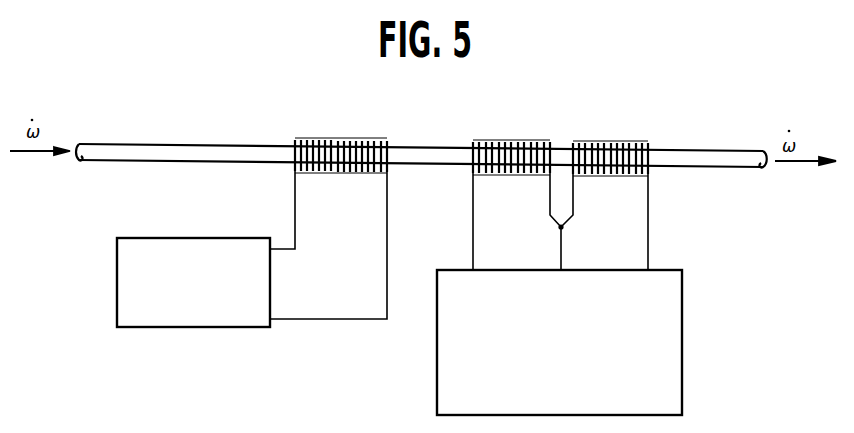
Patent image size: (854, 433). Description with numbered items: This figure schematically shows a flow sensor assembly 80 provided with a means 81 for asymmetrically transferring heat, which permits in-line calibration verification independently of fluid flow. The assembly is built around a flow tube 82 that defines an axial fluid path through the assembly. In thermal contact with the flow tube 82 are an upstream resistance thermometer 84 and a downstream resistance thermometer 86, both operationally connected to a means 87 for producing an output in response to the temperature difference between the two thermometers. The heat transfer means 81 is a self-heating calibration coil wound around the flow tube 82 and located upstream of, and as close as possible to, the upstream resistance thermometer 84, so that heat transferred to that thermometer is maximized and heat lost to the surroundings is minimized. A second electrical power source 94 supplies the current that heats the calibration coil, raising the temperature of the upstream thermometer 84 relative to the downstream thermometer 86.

The flow sensor assembly 80 is at (421, 137).
The means for asymmetrically transferring heat 81 is at (208, 253).
The flow tube 82 is at (211, 158).
The upstream resistance thermometer 84 is at (513, 146).
The downstream resistance thermometer 86 is at (611, 146).
The means for producing an output in response to a temperature difference 87 is at (437, 380).
The second electrical power source 94 is at (210, 328).